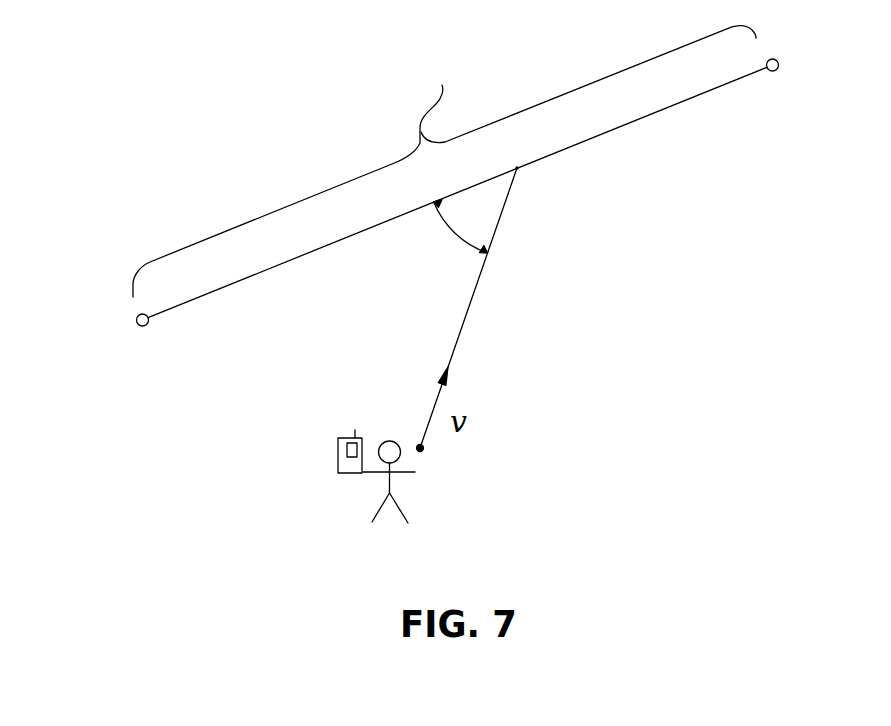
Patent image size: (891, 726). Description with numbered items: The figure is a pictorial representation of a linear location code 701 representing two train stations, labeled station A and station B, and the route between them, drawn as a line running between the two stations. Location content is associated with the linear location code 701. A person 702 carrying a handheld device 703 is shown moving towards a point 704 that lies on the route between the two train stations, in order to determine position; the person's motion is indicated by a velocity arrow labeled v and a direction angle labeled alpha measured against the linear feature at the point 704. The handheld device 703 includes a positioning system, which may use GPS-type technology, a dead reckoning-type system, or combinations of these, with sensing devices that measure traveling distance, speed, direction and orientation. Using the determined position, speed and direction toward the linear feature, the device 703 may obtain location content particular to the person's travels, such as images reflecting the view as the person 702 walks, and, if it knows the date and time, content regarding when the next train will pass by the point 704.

The linear location code 701 is at (464, 198).
The person 702 is at (407, 511).
The handheld device 703 is at (338, 457).
The point 704 is at (520, 169).